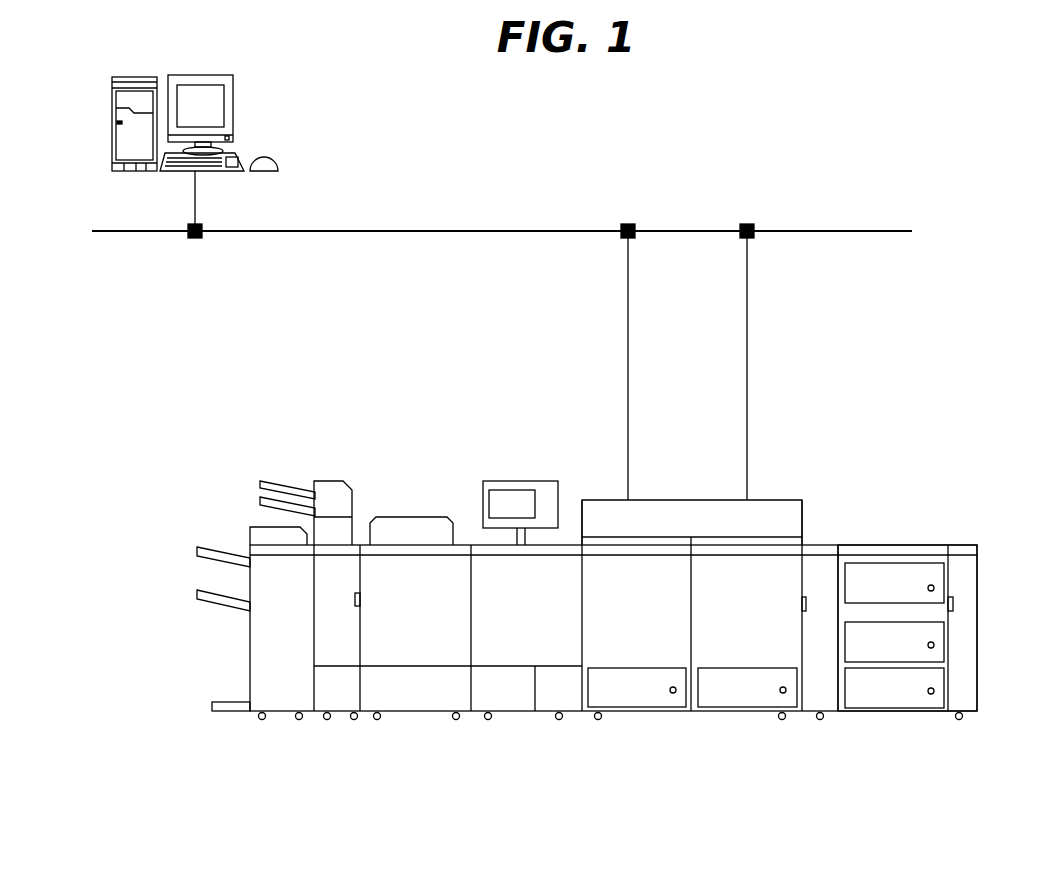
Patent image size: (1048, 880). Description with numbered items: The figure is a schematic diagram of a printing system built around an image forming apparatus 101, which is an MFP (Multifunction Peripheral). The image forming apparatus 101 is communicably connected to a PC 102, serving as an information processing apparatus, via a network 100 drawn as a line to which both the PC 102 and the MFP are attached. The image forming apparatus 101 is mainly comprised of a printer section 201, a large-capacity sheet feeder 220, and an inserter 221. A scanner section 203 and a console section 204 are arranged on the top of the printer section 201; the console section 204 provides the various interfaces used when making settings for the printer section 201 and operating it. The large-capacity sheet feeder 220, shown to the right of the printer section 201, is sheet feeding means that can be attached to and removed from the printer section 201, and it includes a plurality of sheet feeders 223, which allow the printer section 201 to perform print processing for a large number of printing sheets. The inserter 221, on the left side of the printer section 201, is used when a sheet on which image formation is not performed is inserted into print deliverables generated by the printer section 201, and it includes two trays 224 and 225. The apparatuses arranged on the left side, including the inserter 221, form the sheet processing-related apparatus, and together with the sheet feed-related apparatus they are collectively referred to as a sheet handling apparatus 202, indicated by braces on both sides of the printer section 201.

The network 100 is at (843, 231).
The image forming apparatus 101 is at (609, 655).
The PC 102 is at (236, 104).
The printer section 201 is at (372, 775).
The sheet handling apparatus 202 is at (980, 832).
The scanner section 203 is at (415, 517).
The console section 204 is at (530, 481).
The large-capacity sheet feeder 220 is at (908, 545).
The inserter 221 is at (340, 720).
The sheet feeders 223 is at (645, 708).
The tray 224 is at (259, 482).
The tray 225 is at (259, 500).